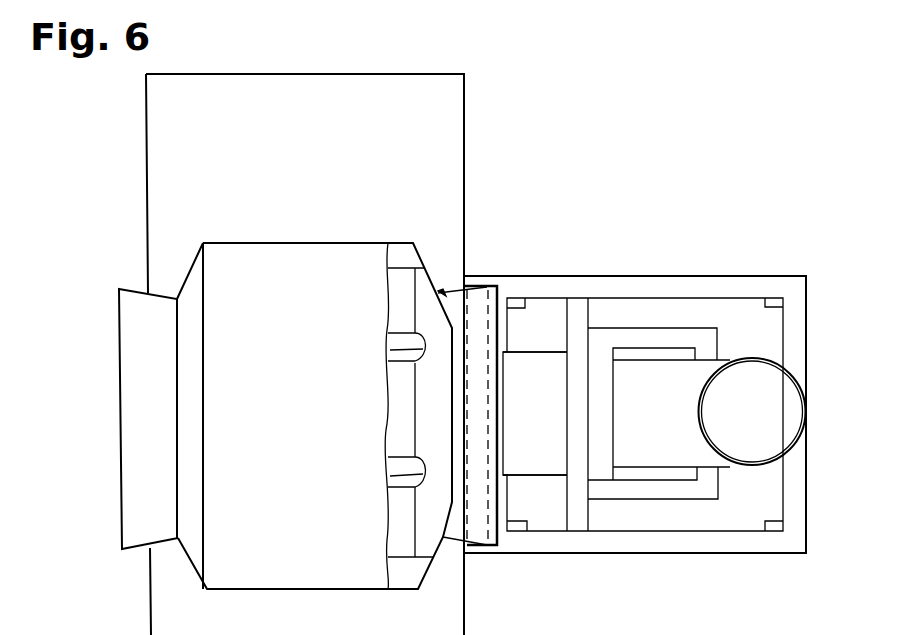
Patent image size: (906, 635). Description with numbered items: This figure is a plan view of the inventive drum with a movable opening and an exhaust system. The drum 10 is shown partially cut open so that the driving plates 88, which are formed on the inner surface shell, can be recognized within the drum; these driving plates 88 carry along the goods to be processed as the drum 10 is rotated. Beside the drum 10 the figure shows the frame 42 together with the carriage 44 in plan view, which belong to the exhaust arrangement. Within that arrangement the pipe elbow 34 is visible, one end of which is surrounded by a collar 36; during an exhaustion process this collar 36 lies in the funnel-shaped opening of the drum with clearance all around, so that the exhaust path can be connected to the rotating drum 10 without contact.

The drum 10 is at (305, 267).
The driving plates 88 is at (390, 455).
The collar 36 is at (537, 378).
The carriage 44 is at (643, 287).
The frame 42 is at (682, 328).
The pipe elbow 34 is at (804, 430).